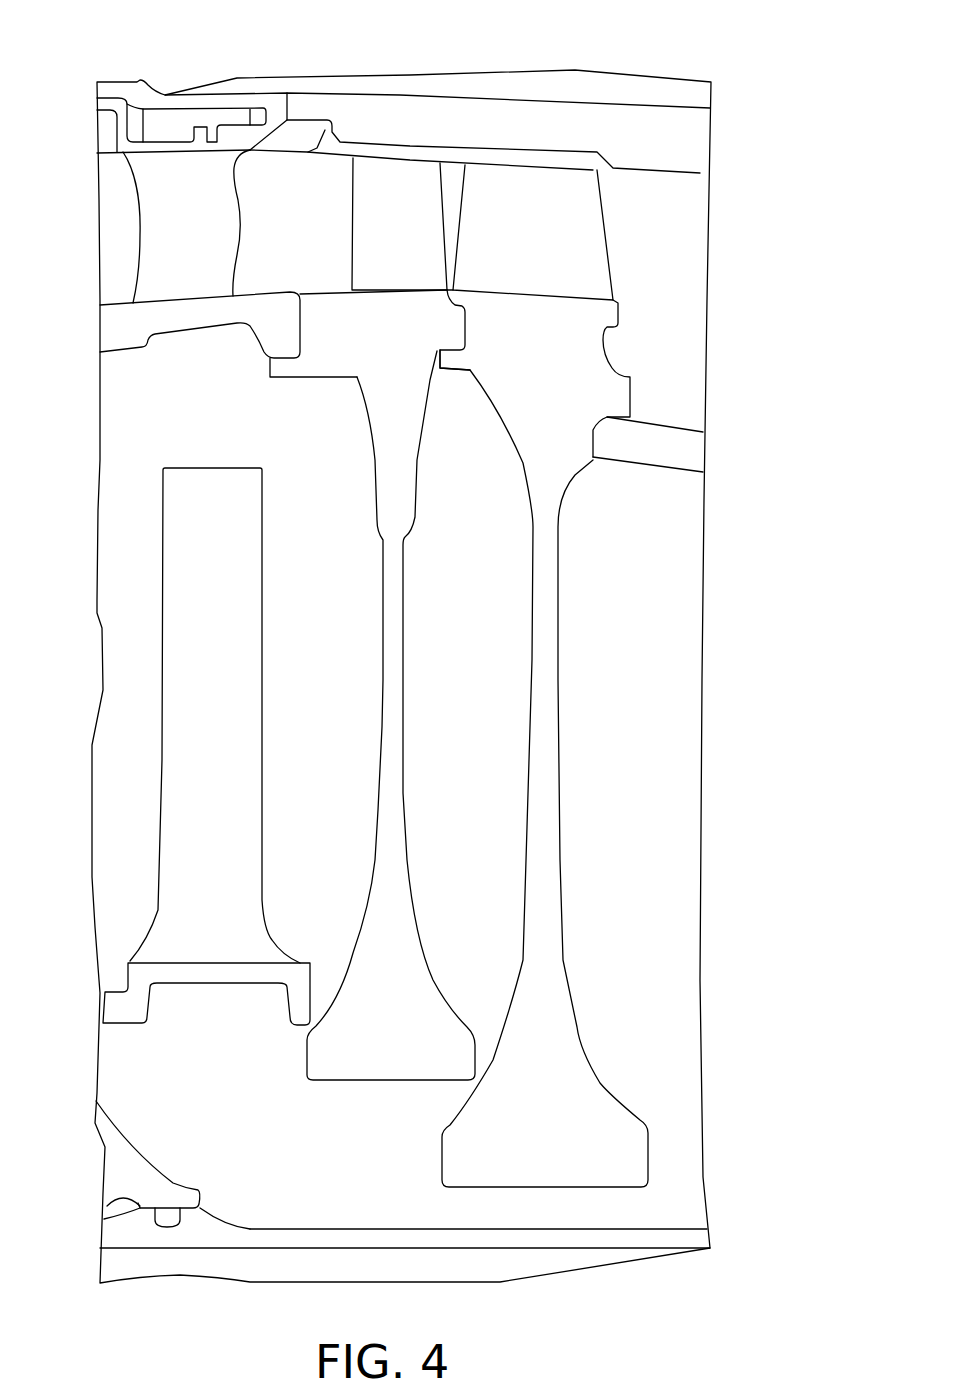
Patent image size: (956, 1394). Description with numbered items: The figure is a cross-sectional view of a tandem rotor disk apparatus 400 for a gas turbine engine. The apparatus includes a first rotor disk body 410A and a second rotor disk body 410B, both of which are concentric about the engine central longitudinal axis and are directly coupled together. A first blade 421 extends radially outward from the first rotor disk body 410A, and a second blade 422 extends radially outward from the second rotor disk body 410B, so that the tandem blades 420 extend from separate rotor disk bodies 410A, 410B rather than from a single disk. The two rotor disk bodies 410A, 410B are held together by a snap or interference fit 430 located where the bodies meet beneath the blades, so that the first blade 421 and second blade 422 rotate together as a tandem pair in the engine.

The tandem rotor disk apparatus 400 is at (672, 671).
The tandem blades 420 is at (455, 160).
The first blade 421 is at (420, 257).
The second blade 422 is at (542, 257).
The first rotor disk body 410A is at (412, 349).
The second rotor disk body 410B is at (569, 406).
The snap or interference fit 430 is at (454, 352).